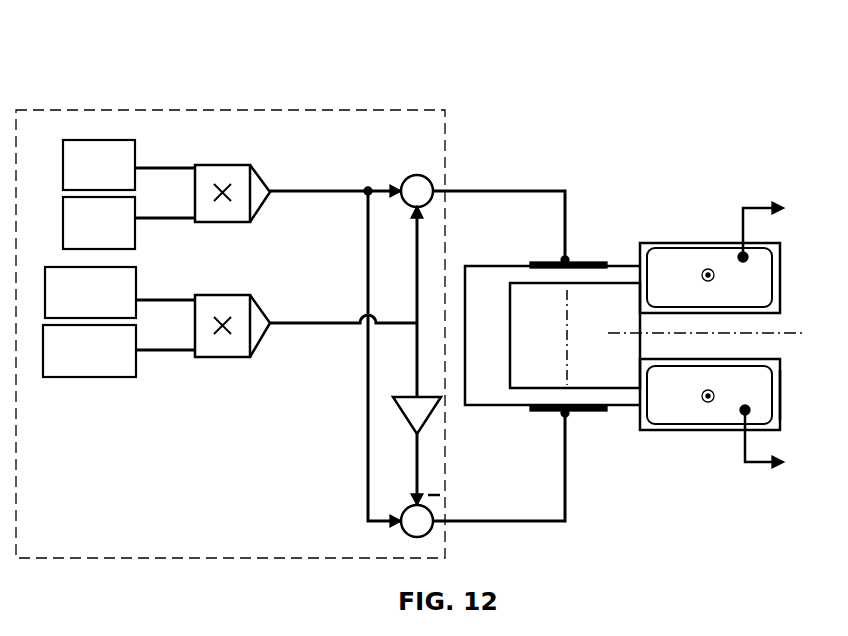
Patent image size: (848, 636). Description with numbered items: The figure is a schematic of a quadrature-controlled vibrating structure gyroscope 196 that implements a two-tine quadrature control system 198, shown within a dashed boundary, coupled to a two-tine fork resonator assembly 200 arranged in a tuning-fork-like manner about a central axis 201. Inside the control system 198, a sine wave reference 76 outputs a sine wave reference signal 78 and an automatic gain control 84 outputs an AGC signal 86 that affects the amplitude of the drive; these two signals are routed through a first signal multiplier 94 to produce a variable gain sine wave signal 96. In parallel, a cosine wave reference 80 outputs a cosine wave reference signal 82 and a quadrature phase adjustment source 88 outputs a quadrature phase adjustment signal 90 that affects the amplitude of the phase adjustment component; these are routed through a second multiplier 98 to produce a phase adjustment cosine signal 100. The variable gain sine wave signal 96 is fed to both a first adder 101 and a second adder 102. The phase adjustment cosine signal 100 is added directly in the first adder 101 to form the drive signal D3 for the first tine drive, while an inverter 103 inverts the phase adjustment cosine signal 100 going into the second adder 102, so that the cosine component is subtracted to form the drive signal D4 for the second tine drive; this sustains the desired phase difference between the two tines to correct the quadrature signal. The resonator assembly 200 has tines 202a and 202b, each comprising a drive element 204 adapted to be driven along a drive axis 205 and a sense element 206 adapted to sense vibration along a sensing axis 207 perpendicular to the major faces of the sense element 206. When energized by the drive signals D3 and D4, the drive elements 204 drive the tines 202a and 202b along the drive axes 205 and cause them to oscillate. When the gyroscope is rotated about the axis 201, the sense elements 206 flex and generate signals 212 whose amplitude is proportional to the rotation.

The quadrature-controlled vibrating structure gyroscope 196 is at (131, 68).
The 2-tine quadrature control system 198 is at (272, 110).
The 2-tine fork resonator assembly 200 is at (651, 84).
The sine wave reference 76 is at (63, 182).
The automatic gain control 84 is at (63, 237).
The cosine wave reference 80 is at (45, 292).
The quadrature phase adjustment source 88 is at (63, 378).
The sine wave reference signal 78 is at (155, 168).
The AGC signal 86 is at (152, 218).
The cosine wave reference signal 82 is at (155, 300).
The quadrature phase adjustment signal 90 is at (163, 352).
The first signal multiplier 94 is at (262, 215).
The second multiplier 98 is at (262, 352).
The variable gain sine wave signal 96 is at (305, 191).
The phase adjustment cosine signal 100 is at (303, 323).
The first adder 101 is at (407, 175).
The second adder 102 is at (427, 523).
The inverter 103 is at (397, 417).
The drive signal D3 is at (480, 190).
The drive signal D4 is at (455, 522).
The drive axis 205 is at (563, 352).
The drive element 204 is at (580, 268).
The first tine 202a is at (680, 243).
The second tine 202b is at (702, 434).
The sense element 206 is at (775, 388).
The sensing axis 207 is at (705, 390).
The signals 212 is at (781, 336).
The central axis 201 is at (805, 333).